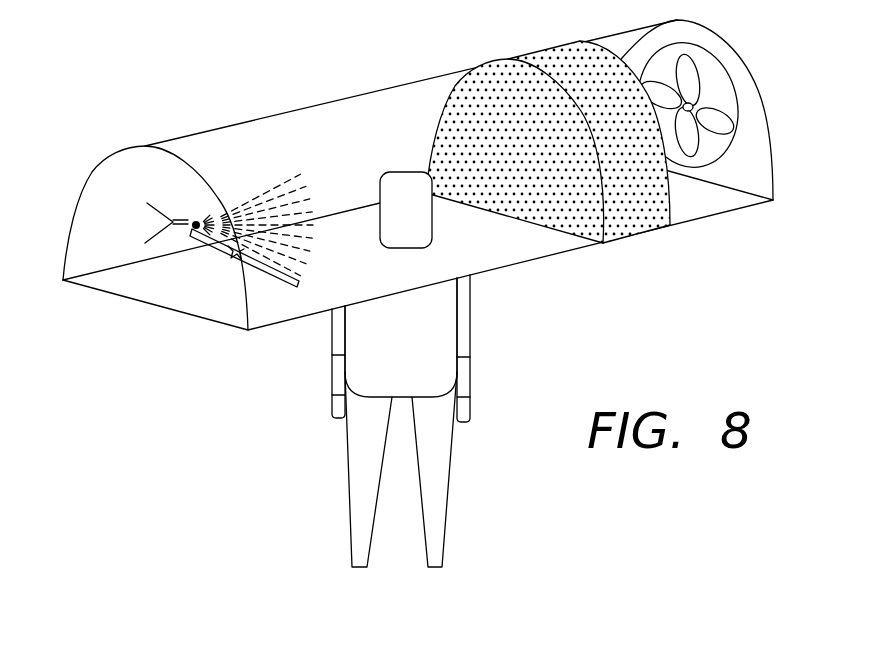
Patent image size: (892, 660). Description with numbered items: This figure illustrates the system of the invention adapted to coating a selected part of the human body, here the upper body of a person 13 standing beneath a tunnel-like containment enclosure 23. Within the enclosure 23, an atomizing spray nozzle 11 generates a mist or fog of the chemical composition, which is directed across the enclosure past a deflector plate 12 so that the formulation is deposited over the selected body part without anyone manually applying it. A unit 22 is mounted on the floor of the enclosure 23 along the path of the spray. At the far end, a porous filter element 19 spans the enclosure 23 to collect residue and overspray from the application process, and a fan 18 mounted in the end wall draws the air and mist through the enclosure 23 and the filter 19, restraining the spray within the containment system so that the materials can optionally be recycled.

The spray nozzle 11 is at (157, 239).
The deflector plate 12 is at (244, 258).
The person 13 is at (358, 452).
The fan 18 is at (702, 163).
The filter 19 is at (628, 228).
The sensor unit 22 is at (371, 282).
The tunnel enclosure 23 is at (297, 118).